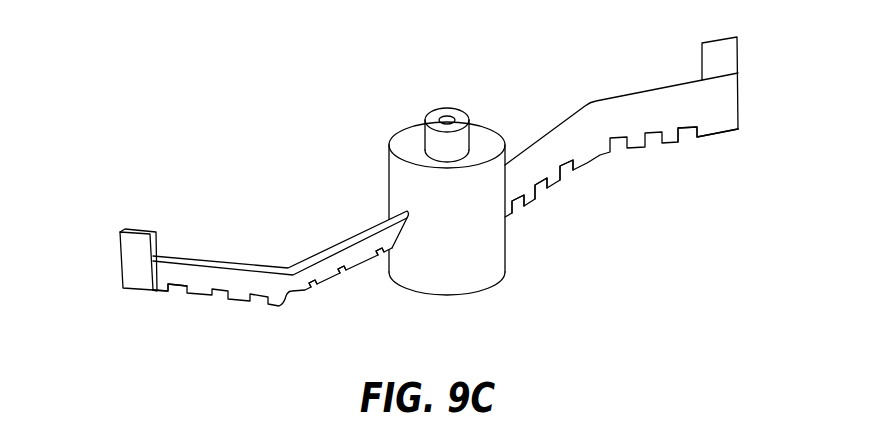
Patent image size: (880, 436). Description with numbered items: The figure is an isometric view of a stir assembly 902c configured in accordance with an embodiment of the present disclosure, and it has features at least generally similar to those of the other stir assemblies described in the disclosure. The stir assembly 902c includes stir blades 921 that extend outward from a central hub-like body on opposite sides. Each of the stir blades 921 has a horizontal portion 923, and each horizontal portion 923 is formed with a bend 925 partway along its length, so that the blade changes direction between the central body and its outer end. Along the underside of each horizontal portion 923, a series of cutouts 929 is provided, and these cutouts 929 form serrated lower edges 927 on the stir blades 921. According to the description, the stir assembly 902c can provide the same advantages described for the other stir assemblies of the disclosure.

The stir assembly 902c is at (405, 55).
The stir blades 921 is at (98, 267).
The horizontal portions 923 is at (283, 292).
The bends 925 is at (293, 265).
The serrated lower edges 927 is at (147, 315).
The cutouts 929 is at (308, 297).